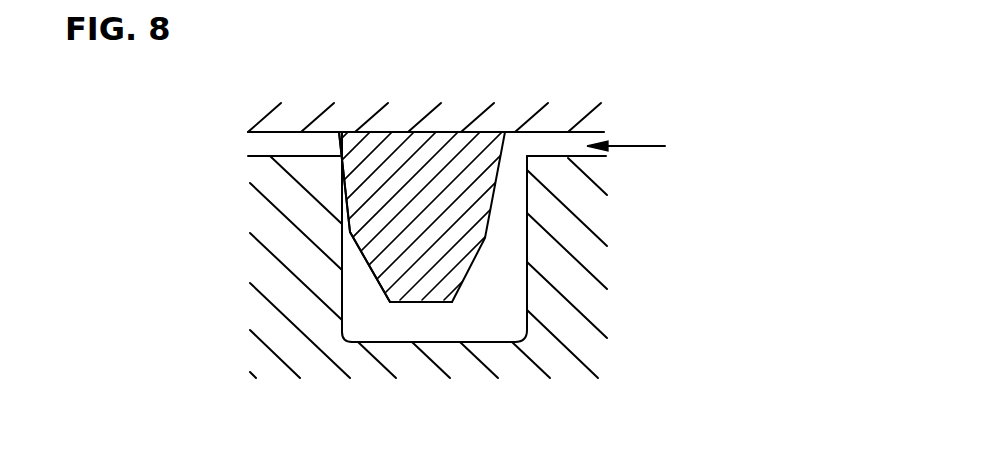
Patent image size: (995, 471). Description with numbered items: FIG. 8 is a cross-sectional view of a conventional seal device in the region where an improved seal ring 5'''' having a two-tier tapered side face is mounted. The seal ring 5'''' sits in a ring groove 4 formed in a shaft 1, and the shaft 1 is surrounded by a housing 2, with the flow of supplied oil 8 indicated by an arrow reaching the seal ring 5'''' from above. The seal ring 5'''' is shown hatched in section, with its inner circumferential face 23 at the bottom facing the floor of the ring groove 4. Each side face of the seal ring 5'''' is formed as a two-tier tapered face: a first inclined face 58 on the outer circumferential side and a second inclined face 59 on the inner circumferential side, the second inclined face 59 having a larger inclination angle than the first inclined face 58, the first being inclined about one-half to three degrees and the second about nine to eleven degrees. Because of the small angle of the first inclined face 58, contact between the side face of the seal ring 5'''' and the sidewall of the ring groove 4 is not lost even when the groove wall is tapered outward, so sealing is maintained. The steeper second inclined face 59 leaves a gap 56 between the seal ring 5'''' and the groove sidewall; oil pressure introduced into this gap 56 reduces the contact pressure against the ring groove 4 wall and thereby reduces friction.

The shaft 1 is at (640, 245).
The housing 2 is at (565, 118).
The flow of supplied oil 8 is at (639, 146).
The seal ring 5'''' is at (473, 151).
The first inclined face 58 is at (350, 205).
The second inclined face 59 is at (367, 250).
The gap 56 is at (360, 277).
The inner circumferential face 23 is at (413, 303).
The ring groove 4 is at (470, 342).